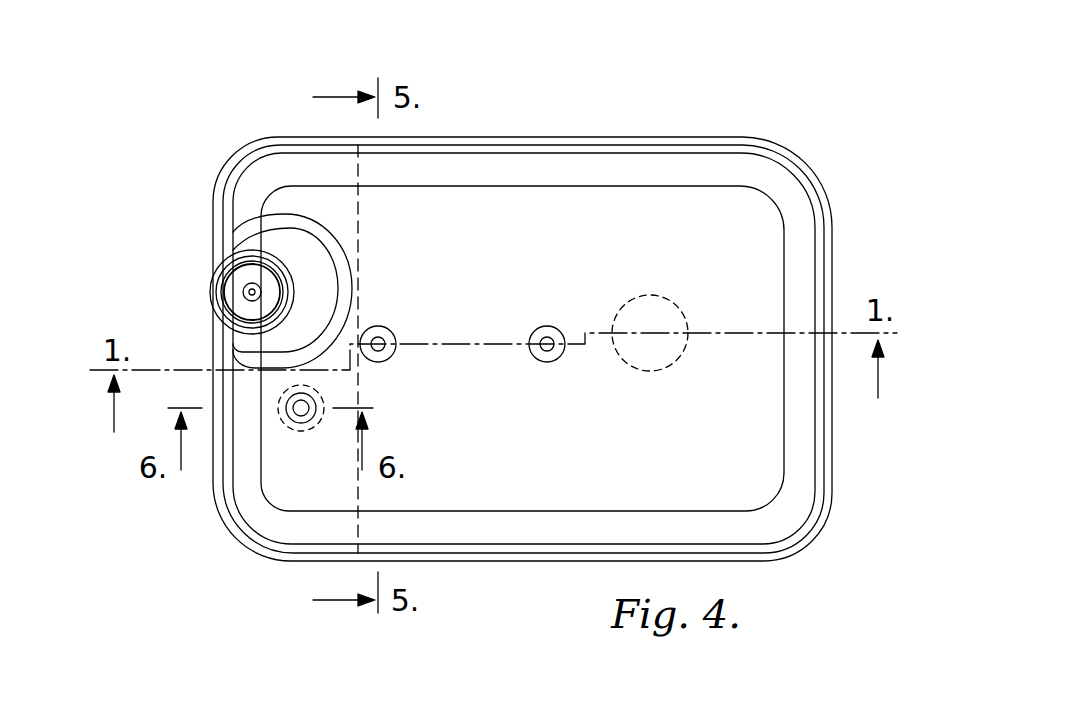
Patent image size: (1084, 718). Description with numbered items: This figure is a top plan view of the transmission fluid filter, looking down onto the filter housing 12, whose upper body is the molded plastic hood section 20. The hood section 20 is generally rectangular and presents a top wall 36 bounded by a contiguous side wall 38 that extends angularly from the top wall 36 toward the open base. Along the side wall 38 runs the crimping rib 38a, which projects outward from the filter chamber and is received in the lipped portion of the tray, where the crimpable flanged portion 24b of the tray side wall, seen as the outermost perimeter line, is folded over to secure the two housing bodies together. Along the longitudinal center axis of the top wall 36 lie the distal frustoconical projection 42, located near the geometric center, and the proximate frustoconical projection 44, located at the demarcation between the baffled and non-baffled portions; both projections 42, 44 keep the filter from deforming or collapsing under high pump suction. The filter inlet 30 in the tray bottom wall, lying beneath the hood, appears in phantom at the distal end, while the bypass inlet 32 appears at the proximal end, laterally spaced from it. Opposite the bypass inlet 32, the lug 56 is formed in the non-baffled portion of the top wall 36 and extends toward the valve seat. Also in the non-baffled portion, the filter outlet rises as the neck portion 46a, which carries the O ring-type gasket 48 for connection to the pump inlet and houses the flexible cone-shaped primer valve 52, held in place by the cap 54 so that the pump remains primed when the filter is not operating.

The filter housing 12 is at (548, 104).
The hood section 20 is at (758, 240).
The flanged portion 24b is at (800, 540).
The filter inlet 30 is at (650, 300).
The bypass inlet 32 is at (317, 423).
The top wall 36 is at (767, 437).
The side wall 38 is at (797, 478).
The crimping rib 38a is at (807, 518).
The distal frustoconical projection 42 is at (553, 353).
The proximate frustoconical projection 44 is at (392, 354).
The neck portion 46a is at (253, 233).
The O ring-type gasket 48 is at (217, 271).
The primer valve 52 is at (250, 308).
The cap 54 is at (250, 292).
The lug 56 is at (288, 416).